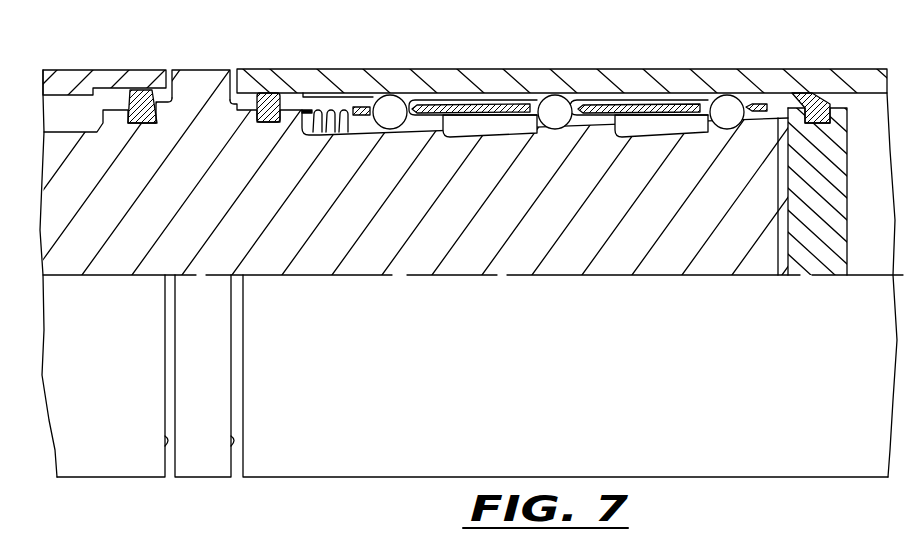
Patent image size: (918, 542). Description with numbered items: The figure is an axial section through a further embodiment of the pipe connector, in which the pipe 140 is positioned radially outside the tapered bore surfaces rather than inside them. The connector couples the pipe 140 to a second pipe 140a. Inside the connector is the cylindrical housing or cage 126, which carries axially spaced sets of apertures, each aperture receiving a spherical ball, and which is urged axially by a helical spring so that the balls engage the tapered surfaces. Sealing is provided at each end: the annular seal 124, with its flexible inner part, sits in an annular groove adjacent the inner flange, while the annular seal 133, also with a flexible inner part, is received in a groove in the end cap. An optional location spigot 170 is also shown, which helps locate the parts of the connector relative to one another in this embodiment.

The pipe 140a is at (90, 78).
The annular seal 124 is at (143, 93).
The location spigot 170 is at (195, 83).
The pipe 140 is at (358, 83).
The cylindrical housing or cage 126 is at (452, 106).
The annular seal 133 is at (814, 100).